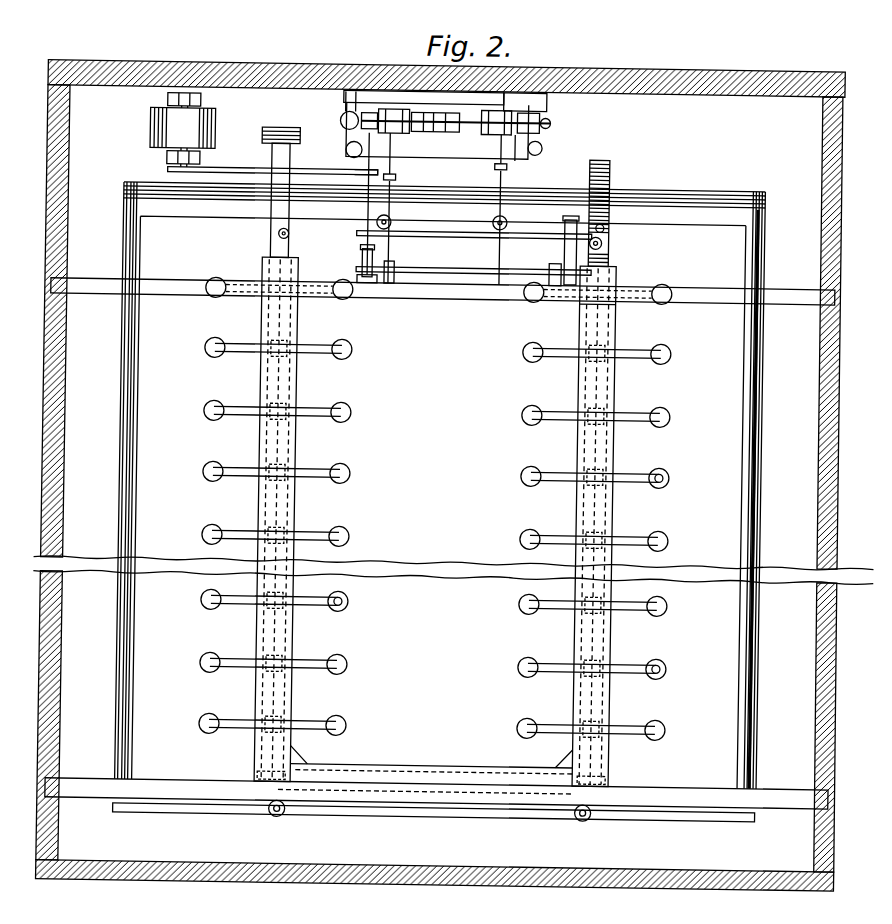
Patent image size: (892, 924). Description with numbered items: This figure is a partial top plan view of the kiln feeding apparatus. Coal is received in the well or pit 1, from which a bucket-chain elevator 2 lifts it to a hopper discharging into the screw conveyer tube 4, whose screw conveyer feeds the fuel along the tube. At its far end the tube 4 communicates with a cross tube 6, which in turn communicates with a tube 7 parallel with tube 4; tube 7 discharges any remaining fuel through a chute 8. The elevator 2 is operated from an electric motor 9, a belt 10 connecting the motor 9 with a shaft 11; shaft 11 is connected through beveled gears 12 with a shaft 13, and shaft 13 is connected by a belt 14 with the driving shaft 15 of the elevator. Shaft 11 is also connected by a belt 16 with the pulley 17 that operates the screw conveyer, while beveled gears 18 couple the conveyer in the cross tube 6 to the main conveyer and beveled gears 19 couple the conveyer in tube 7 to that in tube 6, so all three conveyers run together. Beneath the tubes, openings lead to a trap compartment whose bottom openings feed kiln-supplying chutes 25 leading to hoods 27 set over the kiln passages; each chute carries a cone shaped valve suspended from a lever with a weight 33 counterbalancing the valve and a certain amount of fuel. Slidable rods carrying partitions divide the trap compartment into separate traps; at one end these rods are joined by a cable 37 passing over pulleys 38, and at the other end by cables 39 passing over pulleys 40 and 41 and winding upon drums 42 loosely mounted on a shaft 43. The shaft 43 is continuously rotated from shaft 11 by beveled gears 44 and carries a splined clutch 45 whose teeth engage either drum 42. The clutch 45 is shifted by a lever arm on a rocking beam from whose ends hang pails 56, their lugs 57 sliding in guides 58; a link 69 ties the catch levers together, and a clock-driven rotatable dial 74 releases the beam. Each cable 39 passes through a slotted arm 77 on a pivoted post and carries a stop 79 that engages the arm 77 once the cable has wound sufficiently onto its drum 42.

The well or pit 1 is at (441, 475).
The bucket-chain elevator 2 is at (605, 170).
The screw conveyer tube 4 is at (615, 334).
The cross tube 6 is at (432, 776).
The tube 7 is at (298, 630).
The chute 8 is at (280, 192).
The electric motor 9 is at (183, 129).
The belt 10 is at (247, 170).
The shaft 11 is at (364, 170).
The beveled gears 12 is at (358, 262).
The shaft 13 is at (432, 280).
The belt 14 is at (556, 257).
The driving shaft 15 is at (562, 222).
The belt 16 is at (473, 238).
The pulley 17 is at (602, 246).
The beveled gears 18 is at (612, 777).
The beveled gears 19 is at (262, 777).
The kiln-supplying chute 25 is at (244, 358).
The hood 27 is at (342, 364).
The weight 33 is at (662, 480).
The cable 37 is at (460, 818).
The pulleys 38 is at (282, 820).
The cables 39 is at (346, 232).
The pulleys 40 is at (274, 236).
The pulleys 41 is at (388, 221).
The drums 42 is at (398, 136).
The shaft 43 is at (436, 124).
The beveled gears 44 is at (356, 126).
The clutch 45 is at (452, 112).
The pails or buckets 56 is at (336, 118).
The lugs 57 is at (544, 126).
The guides 58 is at (341, 150).
The link 69 is at (374, 101).
The rotatable dial 74 is at (545, 100).
The arm 77 is at (514, 176).
The stop 79 is at (392, 179).